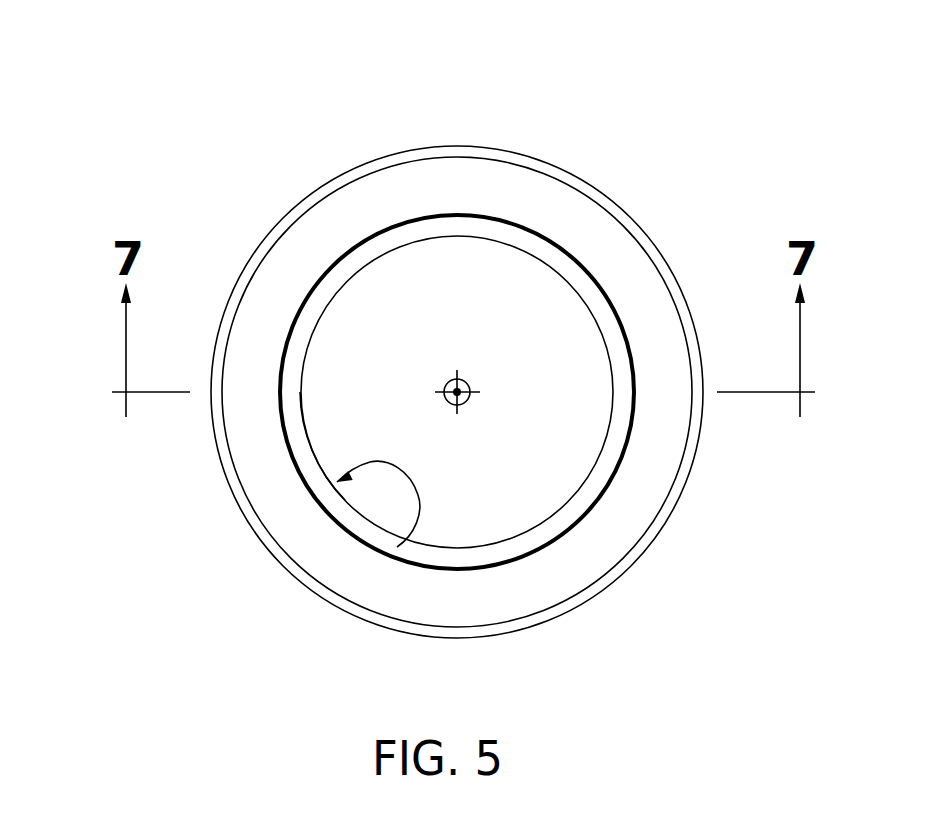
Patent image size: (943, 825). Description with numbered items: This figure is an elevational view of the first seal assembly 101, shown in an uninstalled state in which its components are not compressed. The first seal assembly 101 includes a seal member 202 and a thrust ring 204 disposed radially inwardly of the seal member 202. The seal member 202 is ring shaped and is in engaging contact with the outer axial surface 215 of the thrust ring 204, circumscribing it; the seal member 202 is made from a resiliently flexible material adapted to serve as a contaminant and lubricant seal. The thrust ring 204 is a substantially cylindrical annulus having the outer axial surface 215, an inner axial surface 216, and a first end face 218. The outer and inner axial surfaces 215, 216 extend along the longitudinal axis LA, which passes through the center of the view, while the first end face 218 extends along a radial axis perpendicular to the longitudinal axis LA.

The first seal assembly 101 is at (212, 125).
The seal member 202 is at (340, 218).
The thrust ring 204 is at (423, 233).
The outer axial surface 215 is at (283, 430).
The inner axial surface 216 is at (397, 547).
The first end face 218 is at (323, 483).
The longitudinal axis LA is at (470, 389).